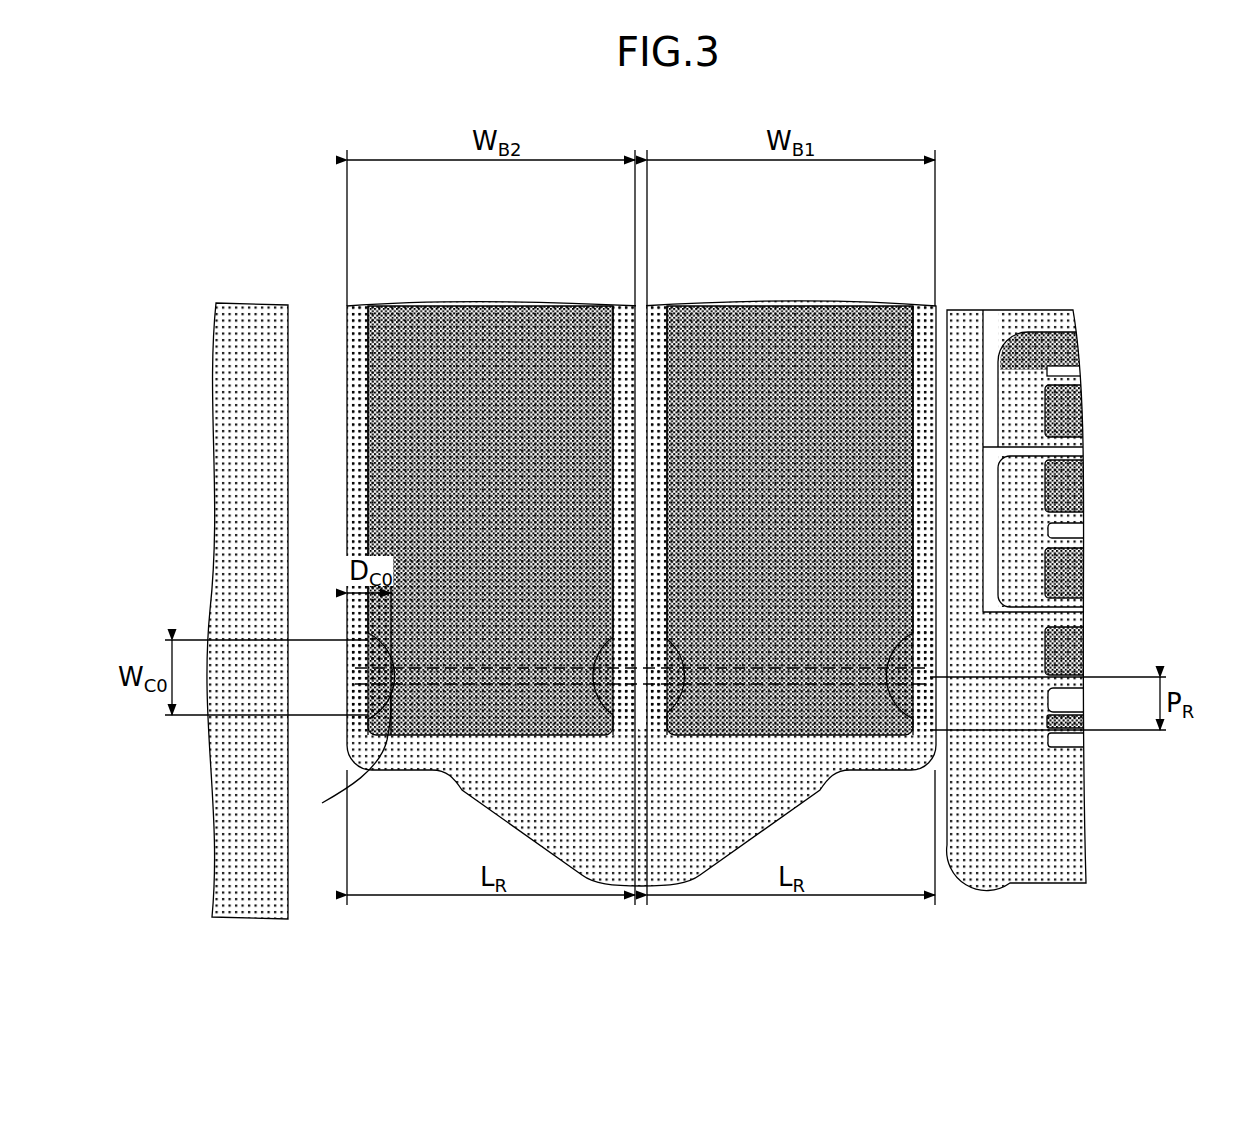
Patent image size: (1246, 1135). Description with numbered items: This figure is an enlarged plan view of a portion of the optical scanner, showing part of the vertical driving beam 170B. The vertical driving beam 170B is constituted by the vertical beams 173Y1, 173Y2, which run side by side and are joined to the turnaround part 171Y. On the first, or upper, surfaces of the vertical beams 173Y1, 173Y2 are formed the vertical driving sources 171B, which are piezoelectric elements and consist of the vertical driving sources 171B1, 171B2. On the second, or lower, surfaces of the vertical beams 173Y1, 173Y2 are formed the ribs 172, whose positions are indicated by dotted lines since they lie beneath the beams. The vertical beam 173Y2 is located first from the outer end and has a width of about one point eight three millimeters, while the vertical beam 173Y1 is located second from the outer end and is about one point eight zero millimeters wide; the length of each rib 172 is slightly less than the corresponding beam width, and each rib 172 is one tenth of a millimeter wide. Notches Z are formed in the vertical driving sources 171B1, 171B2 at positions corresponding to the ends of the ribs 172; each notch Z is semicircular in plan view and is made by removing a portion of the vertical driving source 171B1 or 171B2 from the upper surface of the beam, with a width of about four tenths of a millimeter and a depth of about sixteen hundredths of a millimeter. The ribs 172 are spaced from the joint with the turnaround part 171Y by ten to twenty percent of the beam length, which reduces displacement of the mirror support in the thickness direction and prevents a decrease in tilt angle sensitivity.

The vertical beam 173Y2 is at (490, 308).
The vertical beam 173Y1 is at (782, 308).
The vertical driving source 171B1 is at (805, 432).
The vertical driving source 171B2 is at (497, 556).
The vertical driving sources 171B is at (1136, 222).
The vertical driving beam 170B is at (417, 779).
The turnaround part 171Y is at (727, 797).
The rib 172 is at (497, 688).
The notch Z is at (322, 803).